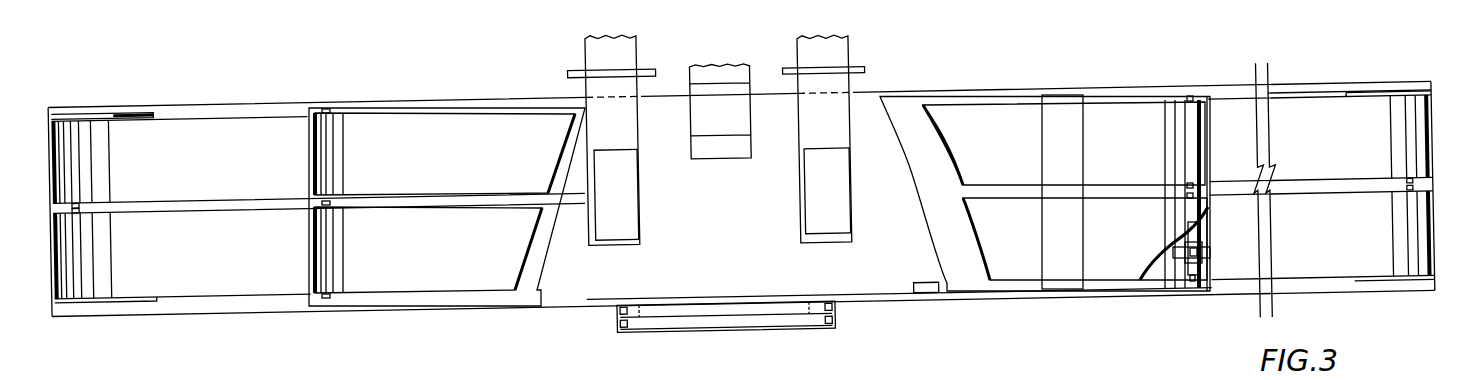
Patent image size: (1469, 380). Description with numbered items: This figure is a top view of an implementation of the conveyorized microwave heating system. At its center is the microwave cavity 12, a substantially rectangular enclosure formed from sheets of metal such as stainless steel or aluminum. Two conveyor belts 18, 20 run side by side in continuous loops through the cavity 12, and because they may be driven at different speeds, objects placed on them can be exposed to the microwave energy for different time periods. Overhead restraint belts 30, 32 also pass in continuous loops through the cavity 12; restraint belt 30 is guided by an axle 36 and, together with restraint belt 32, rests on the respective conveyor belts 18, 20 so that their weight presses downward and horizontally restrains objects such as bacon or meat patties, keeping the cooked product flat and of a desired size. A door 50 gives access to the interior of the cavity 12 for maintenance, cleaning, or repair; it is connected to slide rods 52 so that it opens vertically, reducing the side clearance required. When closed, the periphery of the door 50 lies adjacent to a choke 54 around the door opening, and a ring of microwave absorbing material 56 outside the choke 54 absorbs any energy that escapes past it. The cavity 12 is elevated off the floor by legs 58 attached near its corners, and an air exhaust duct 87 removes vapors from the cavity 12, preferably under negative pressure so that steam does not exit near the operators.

The microwave cavity 12 is at (882, 292).
The conveyor belt 18 is at (277, 293).
The conveyor belt 20 is at (267, 118).
The overhead restraint belt 30 is at (415, 290).
The overhead restraint belt 32 is at (442, 115).
The axle 36 is at (1187, 267).
The door 50 is at (720, 316).
The slide rods 52 is at (832, 320).
The choke 54 is at (632, 308).
The microwave absorbing material 56 is at (615, 312).
The legs 58 is at (922, 294).
The air exhaust duct 87 is at (703, 122).